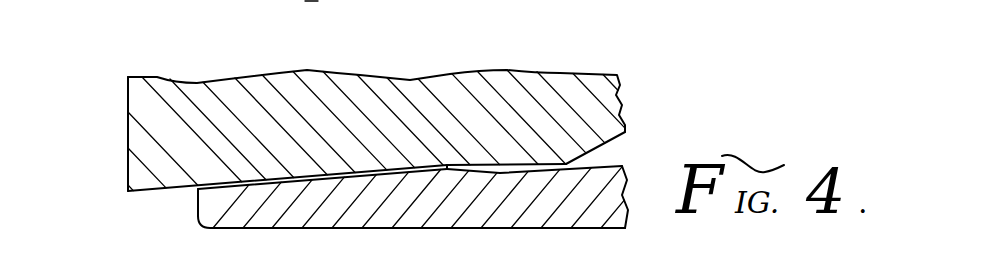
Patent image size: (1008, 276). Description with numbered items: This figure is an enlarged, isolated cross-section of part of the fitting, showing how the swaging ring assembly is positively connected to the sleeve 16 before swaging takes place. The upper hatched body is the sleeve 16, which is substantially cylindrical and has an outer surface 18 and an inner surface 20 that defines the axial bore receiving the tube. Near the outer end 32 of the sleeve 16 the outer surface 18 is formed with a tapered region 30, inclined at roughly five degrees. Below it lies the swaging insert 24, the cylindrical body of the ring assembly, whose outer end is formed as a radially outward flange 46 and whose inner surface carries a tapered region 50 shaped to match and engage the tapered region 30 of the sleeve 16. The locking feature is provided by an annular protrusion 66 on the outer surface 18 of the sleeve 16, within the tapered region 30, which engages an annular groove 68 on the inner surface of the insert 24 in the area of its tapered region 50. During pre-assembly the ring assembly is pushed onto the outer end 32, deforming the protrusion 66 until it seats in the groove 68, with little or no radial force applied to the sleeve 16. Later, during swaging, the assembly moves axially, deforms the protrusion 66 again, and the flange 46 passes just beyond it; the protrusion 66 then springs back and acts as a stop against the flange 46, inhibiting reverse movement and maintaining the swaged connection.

The sleeve 16 is at (634, 178).
The outer surface 18 is at (618, 136).
The inner surface 20 is at (288, 229).
The swaging insert 24 is at (531, 71).
The tapered region 30 is at (380, 172).
The outer end 32 is at (196, 203).
The flange 46 is at (128, 120).
The tapered region 50 is at (514, 172).
The annular protrusion 66 is at (452, 163).
The annular groove 68 is at (458, 167).